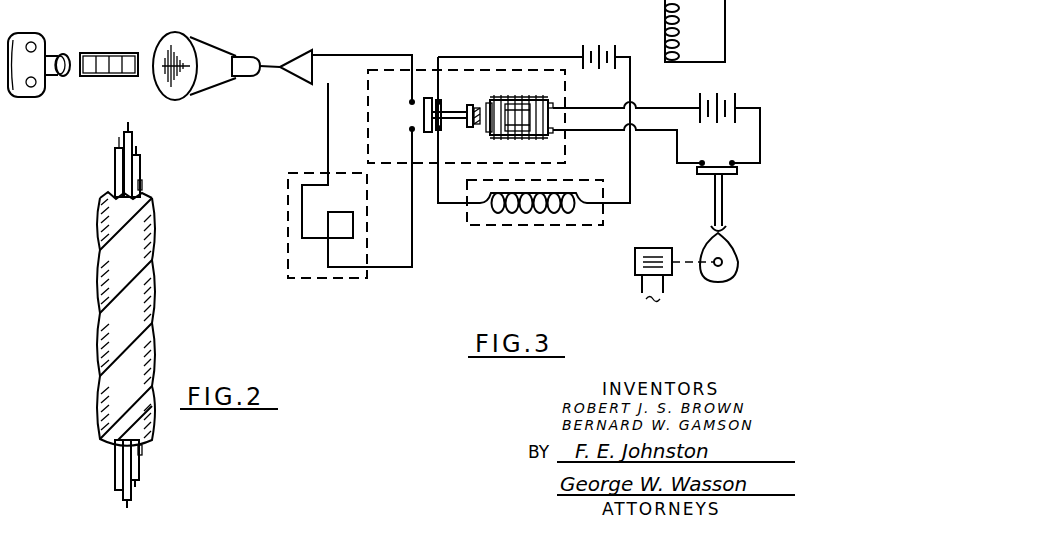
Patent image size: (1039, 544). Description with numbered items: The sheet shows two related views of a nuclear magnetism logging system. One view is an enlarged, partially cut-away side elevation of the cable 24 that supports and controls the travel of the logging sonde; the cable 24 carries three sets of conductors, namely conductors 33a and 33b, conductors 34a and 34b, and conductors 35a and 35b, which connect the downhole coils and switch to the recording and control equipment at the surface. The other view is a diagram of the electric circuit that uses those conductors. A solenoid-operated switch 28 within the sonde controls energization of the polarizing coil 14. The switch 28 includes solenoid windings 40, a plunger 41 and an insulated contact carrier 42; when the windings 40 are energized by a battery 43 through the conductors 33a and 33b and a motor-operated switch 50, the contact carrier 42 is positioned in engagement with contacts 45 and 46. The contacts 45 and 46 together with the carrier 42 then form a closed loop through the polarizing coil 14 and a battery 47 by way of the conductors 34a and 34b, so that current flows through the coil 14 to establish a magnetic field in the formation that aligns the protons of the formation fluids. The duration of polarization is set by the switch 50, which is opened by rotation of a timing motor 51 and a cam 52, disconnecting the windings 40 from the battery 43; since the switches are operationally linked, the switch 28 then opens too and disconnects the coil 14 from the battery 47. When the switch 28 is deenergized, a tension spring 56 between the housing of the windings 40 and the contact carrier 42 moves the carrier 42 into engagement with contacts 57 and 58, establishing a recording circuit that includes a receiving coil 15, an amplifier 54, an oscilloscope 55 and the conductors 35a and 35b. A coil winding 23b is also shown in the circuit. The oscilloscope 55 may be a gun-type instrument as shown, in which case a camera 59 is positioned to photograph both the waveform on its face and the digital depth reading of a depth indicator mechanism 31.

In FIG. 3, the polarizing coil 14 is at (535, 226).
In FIG. 3, the receiving coil 15 is at (332, 278).
In FIG. 3, the coil winding 23b is at (668, 28).
In FIG. 2, the cable 24 is at (100, 317).
In FIG. 3, the solenoid-operated switch 28 is at (460, 165).
In FIG. 3, the depth indicator mechanism 31 is at (113, 54).
In FIG. 2, the conductor 33a is at (115, 157).
In FIG. 3, the conductor 33a is at (588, 107).
In FIG. 2, the conductor 33b is at (115, 185).
In FIG. 3, the conductor 33b is at (590, 132).
In FIG. 2, the conductor 34a is at (132, 138).
In FIG. 3, the conductor 34a is at (535, 57).
In FIG. 2, the conductor 34b is at (140, 162).
In FIG. 3, the conductor 34b is at (632, 178).
In FIG. 2, the conductor 35a is at (140, 172).
In FIG. 3, the conductor 35a is at (326, 133).
In FIG. 2, the conductor 35b is at (140, 187).
In FIG. 3, the conductor 35b is at (357, 54).
In FIG. 3, the solenoid windings 40 is at (512, 100).
In FIG. 3, the plunger 41 is at (455, 110).
In FIG. 3, the insulated contact carrier 42 is at (423, 117).
In FIG. 3, the battery 43 is at (737, 100).
In FIG. 3, the contact 45 is at (439, 99).
In FIG. 3, the contact 46 is at (442, 128).
In FIG. 3, the battery 47 is at (600, 47).
In FIG. 3, the motor-operated switch 50 is at (733, 175).
In FIG. 3, the timing motor 51 is at (657, 248).
In FIG. 3, the cam 52 is at (739, 260).
In FIG. 3, the amplifier 54 is at (294, 55).
In FIG. 3, the oscilloscope 55 is at (195, 43).
In FIG. 3, the tension spring 56 is at (478, 124).
In FIG. 3, the contact 57 is at (410, 101).
In FIG. 3, the contact 58 is at (410, 130).
In FIG. 3, the camera 59 is at (44, 39).